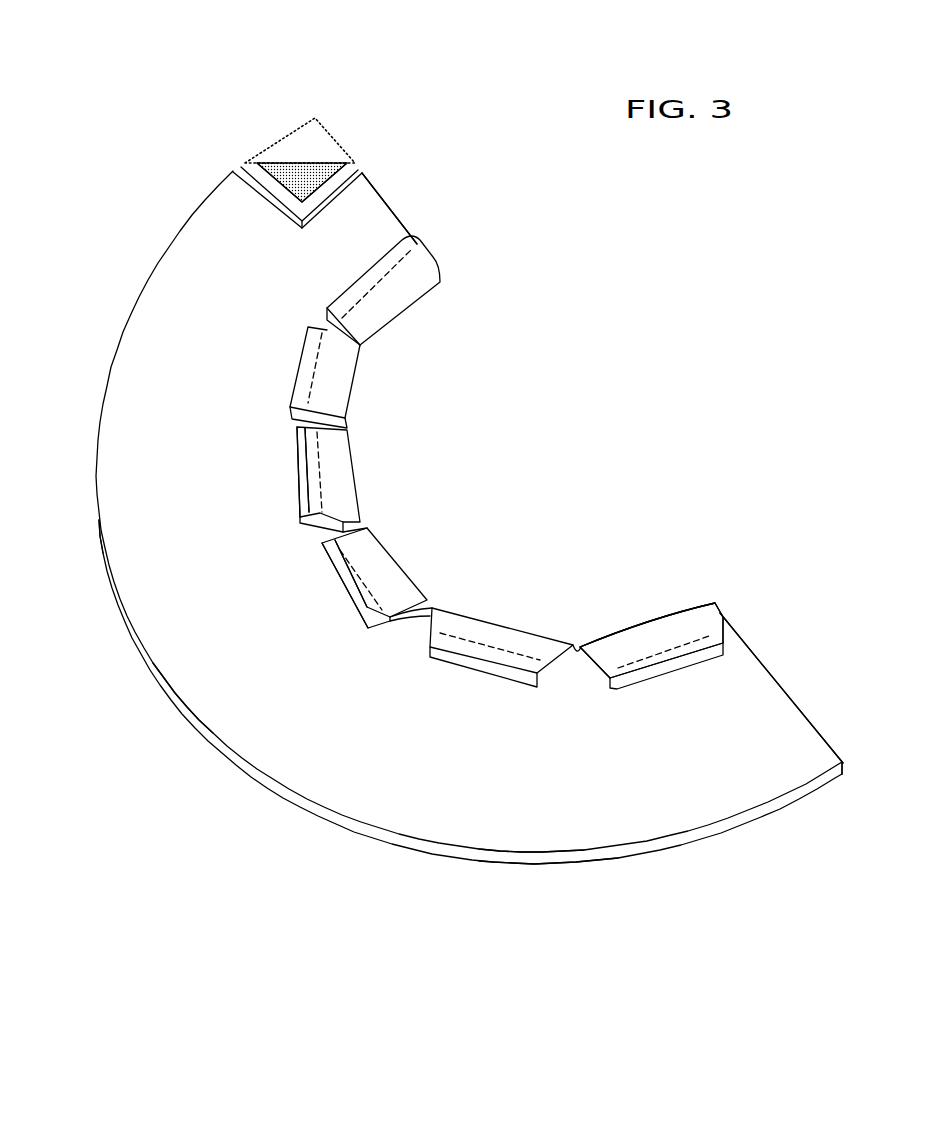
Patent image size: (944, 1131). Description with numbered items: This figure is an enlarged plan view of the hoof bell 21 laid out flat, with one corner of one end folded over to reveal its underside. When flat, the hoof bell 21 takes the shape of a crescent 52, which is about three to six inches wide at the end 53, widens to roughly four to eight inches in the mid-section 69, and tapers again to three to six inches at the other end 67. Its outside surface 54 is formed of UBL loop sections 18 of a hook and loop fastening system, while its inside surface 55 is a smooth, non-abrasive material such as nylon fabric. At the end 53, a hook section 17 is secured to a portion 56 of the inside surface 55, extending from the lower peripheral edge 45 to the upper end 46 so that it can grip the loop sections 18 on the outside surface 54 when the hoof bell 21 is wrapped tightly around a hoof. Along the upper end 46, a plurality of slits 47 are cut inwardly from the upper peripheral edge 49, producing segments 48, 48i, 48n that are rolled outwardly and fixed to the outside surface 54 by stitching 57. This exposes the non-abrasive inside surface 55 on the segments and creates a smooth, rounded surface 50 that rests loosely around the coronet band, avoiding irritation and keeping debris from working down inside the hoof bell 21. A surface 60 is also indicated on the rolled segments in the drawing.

The hook section 17 is at (280, 173).
The UBL loop sections 18 is at (418, 770).
The hoof bell 21 is at (592, 338).
The lower peripheral edge 45 is at (190, 713).
The upper end 46 is at (355, 473).
The slits 47 is at (328, 532).
The segment 48 is at (710, 630).
The segment 48i is at (305, 373).
The segment 48n is at (353, 287).
The upper peripheral edge 49 is at (295, 472).
The smooth, rounded surface 50 is at (403, 567).
The crescent 52 is at (637, 440).
The end 53 is at (378, 190).
The outside surface 54 is at (538, 784).
The inside surface 55 is at (308, 187).
The portion 56 is at (298, 167).
The stitching 57 is at (367, 608).
The top surface of segment 60 is at (678, 635).
The end 67 is at (793, 717).
The mid-section 69 is at (127, 665).